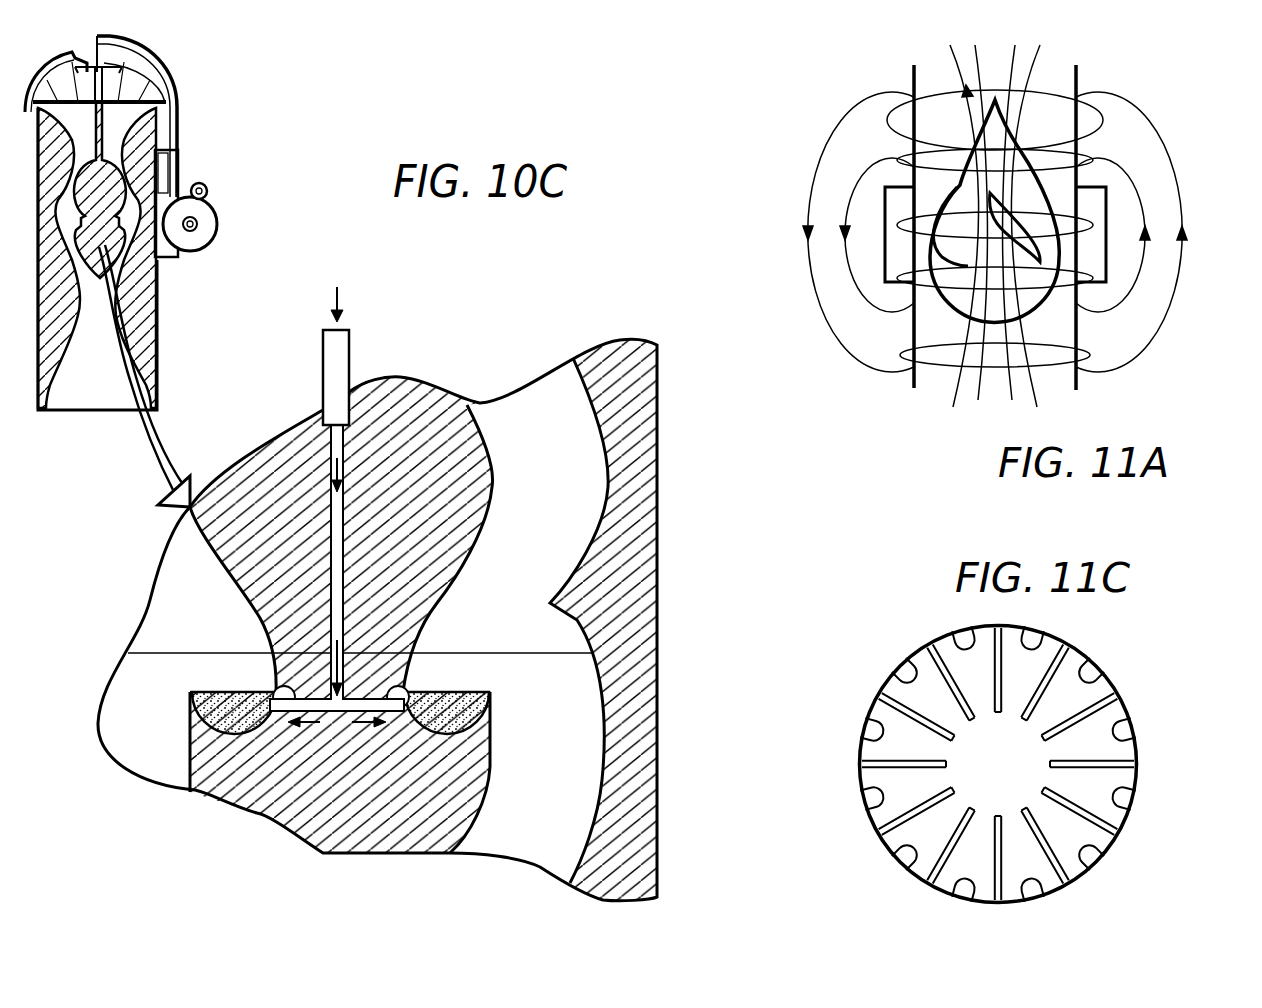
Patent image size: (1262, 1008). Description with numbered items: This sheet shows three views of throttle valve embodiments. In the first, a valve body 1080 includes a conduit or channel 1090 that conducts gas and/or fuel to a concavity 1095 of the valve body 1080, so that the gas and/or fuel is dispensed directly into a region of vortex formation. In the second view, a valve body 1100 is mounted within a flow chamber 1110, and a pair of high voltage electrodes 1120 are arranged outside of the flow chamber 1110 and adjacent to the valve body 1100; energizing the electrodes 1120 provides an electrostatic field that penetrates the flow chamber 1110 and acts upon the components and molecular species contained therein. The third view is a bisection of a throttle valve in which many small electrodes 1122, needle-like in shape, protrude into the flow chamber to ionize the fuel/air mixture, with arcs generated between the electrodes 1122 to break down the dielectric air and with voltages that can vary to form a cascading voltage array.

In FIG. 10C, the valve body 1080 is at (415, 405).
In FIG. 10C, the conduit or channel 1090 is at (337, 453).
In FIG. 10C, the concavity 1095 is at (230, 707).
In FIG. 11A, the valve body 1100 is at (972, 178).
In FIG. 11A, the flow chamber 1110 is at (940, 385).
In FIG. 11A, the high voltage electrodes 1120 is at (893, 203).
In FIG. 11C, the electrodes 1122 is at (935, 672).